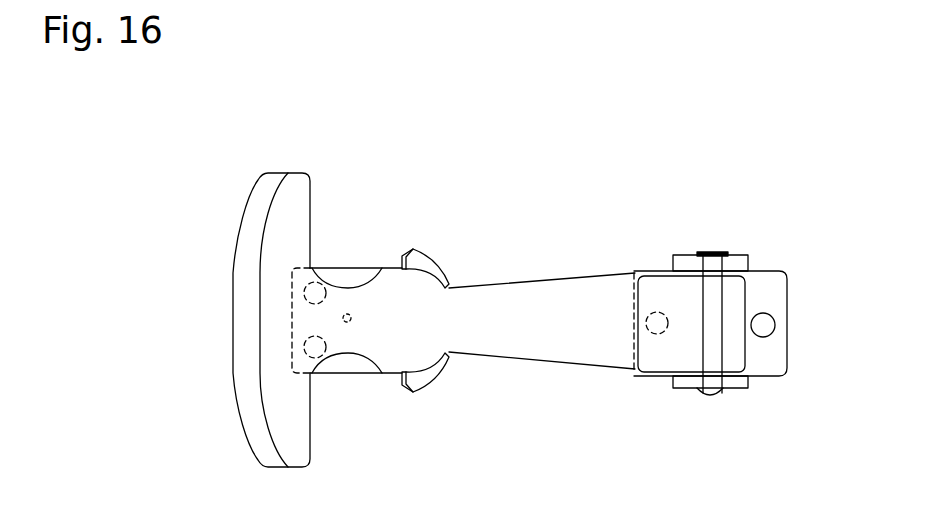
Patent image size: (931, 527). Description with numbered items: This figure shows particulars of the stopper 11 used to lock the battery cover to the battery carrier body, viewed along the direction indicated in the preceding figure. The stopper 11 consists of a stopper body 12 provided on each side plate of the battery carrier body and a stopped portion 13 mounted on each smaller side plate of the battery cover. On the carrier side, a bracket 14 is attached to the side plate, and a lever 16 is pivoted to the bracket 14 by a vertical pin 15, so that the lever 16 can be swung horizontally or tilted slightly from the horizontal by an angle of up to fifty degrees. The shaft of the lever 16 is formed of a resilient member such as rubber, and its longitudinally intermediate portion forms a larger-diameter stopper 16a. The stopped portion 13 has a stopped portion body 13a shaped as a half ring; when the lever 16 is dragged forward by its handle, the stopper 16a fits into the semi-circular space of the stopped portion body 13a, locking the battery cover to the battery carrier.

The stopper 11 is at (488, 208).
The stopper body 12 is at (543, 262).
The stopped portion 13 is at (365, 265).
The stopped portion body 13a is at (422, 373).
The bracket 14 is at (738, 388).
The vertical pin 15 is at (715, 312).
The lever 16 is at (580, 297).
The larger-diameter stopper 16a is at (390, 347).